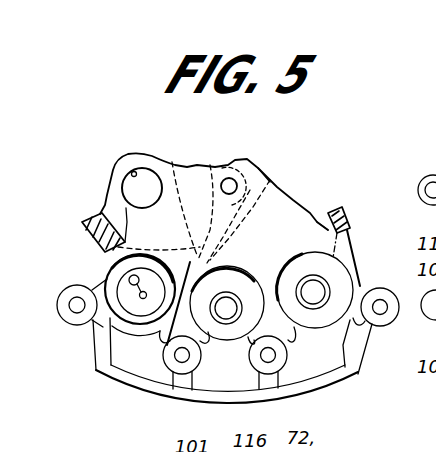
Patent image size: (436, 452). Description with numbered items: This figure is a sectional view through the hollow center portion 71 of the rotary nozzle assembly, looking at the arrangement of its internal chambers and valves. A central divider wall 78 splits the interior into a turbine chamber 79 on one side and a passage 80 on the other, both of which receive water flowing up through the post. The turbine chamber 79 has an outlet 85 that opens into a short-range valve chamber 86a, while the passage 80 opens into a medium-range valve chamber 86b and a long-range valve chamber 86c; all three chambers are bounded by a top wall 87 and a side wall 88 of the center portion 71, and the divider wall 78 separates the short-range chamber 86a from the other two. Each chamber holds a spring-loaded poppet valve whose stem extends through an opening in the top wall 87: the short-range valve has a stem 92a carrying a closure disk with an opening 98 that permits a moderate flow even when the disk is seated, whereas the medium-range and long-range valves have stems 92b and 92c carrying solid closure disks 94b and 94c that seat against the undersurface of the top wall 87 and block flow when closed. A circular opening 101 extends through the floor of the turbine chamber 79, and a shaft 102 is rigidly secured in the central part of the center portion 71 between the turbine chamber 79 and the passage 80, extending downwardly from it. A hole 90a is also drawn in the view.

The center portion 71 is at (102, 392).
The central divider wall 78 is at (268, 186).
The turbine chamber 79 is at (200, 163).
The passage 80 is at (319, 200).
The outlet 85 is at (210, 233).
The short-range valve chamber 86a is at (182, 271).
The medium-range valve chamber 86b is at (316, 262).
The long-range valve chamber 86c is at (245, 280).
The top wall 87 is at (158, 334).
The side wall 88 is at (338, 206).
The left lug hole 90a is at (108, 283).
The stem 92a is at (110, 257).
The valve stem 92b is at (352, 333).
The valve stem 92c is at (240, 325).
The closure disk 94b is at (328, 283).
The closure disk 94c is at (282, 276).
The opening 98 is at (136, 276).
The circular opening 101 is at (135, 171).
The shaft 102 is at (236, 180).